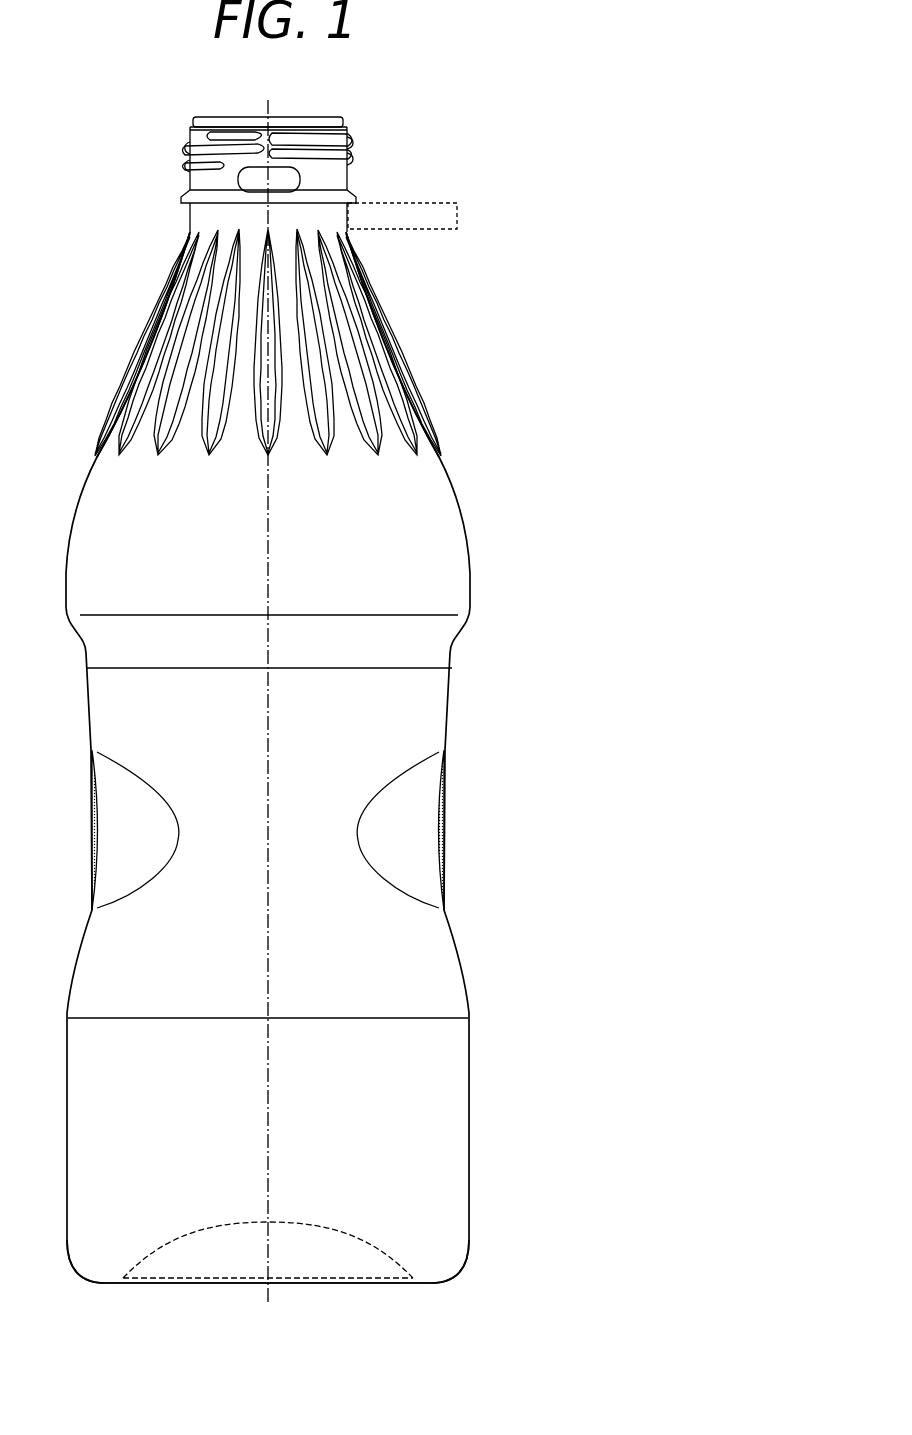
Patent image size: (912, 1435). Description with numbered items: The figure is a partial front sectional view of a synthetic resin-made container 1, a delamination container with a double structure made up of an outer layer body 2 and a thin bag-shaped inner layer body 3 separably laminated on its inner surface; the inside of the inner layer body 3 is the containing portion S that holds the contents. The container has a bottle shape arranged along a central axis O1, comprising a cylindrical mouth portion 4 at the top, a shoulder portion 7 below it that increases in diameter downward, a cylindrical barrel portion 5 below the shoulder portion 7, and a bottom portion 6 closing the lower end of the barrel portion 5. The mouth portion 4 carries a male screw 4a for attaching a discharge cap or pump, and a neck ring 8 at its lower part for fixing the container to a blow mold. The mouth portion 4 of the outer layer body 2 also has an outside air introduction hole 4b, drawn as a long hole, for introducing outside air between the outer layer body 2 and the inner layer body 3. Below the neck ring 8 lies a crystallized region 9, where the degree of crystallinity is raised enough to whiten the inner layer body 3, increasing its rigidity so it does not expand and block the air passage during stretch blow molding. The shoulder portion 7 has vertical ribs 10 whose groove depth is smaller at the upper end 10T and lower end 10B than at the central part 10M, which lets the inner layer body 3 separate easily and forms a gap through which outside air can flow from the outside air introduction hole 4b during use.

The synthetic resin-made container 1 is at (505, 128).
The central axis O1 is at (275, 692).
The outer layer body 2 is at (443, 803).
The inner layer body 3 is at (443, 812).
The mouth portion 4 is at (350, 166).
The male screw 4a is at (350, 142).
The outside air introduction hole 4b is at (249, 176).
The barrel portion 5 is at (448, 845).
The containing portion S is at (400, 865).
The bottom portion 6 is at (352, 1288).
The shoulder portion 7 is at (388, 354).
The neck ring 8 is at (356, 198).
The crystallized region 9 is at (459, 203).
The vertical rib 10 is at (317, 396).
The upper end 10T is at (300, 228).
The central part 10M is at (307, 343).
The lower end 10B is at (330, 457).